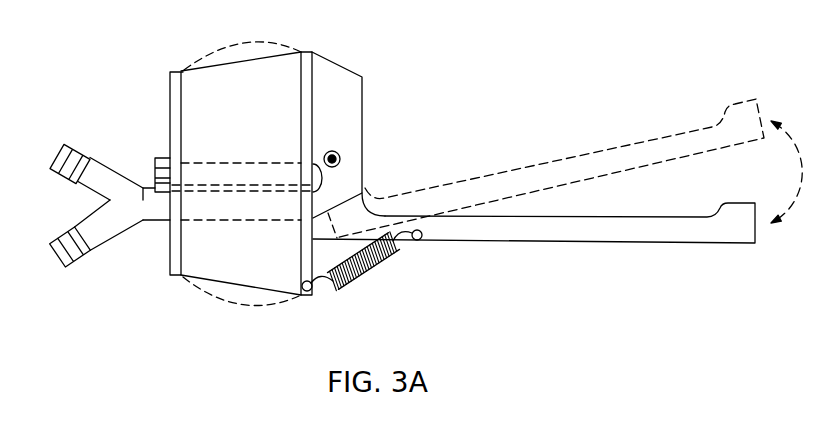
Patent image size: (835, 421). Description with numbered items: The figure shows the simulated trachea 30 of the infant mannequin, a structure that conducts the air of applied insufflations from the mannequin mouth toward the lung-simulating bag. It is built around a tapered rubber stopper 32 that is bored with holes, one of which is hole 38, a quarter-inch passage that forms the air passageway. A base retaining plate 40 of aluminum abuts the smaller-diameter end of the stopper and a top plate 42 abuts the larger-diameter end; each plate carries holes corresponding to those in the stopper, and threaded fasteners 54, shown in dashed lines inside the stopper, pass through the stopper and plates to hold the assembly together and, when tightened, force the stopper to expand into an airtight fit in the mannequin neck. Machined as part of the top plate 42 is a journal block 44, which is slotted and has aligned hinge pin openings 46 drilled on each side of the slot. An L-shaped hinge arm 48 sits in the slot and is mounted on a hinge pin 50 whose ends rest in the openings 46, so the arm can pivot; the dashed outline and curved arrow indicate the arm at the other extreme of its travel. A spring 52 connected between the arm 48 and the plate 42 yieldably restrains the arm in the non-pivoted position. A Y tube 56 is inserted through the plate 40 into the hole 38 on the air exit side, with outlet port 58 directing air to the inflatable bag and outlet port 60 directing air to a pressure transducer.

The simulated trachea 30 is at (416, 151).
The rubber stopper 32 is at (270, 68).
The bored hole 38 is at (200, 212).
The base retaining plate 40 is at (173, 97).
The top plate 42 is at (312, 57).
The journal block 44 is at (342, 75).
The hinge pin openings 46 is at (336, 152).
The L-shaped hinge arm 48 is at (505, 238).
The hinge pin 50 is at (340, 159).
The spring 52 is at (380, 270).
The threaded fasteners 54 is at (242, 206).
The Y tube 56 is at (106, 235).
The outlet port 58 is at (62, 148).
The outlet port 60 is at (60, 261).